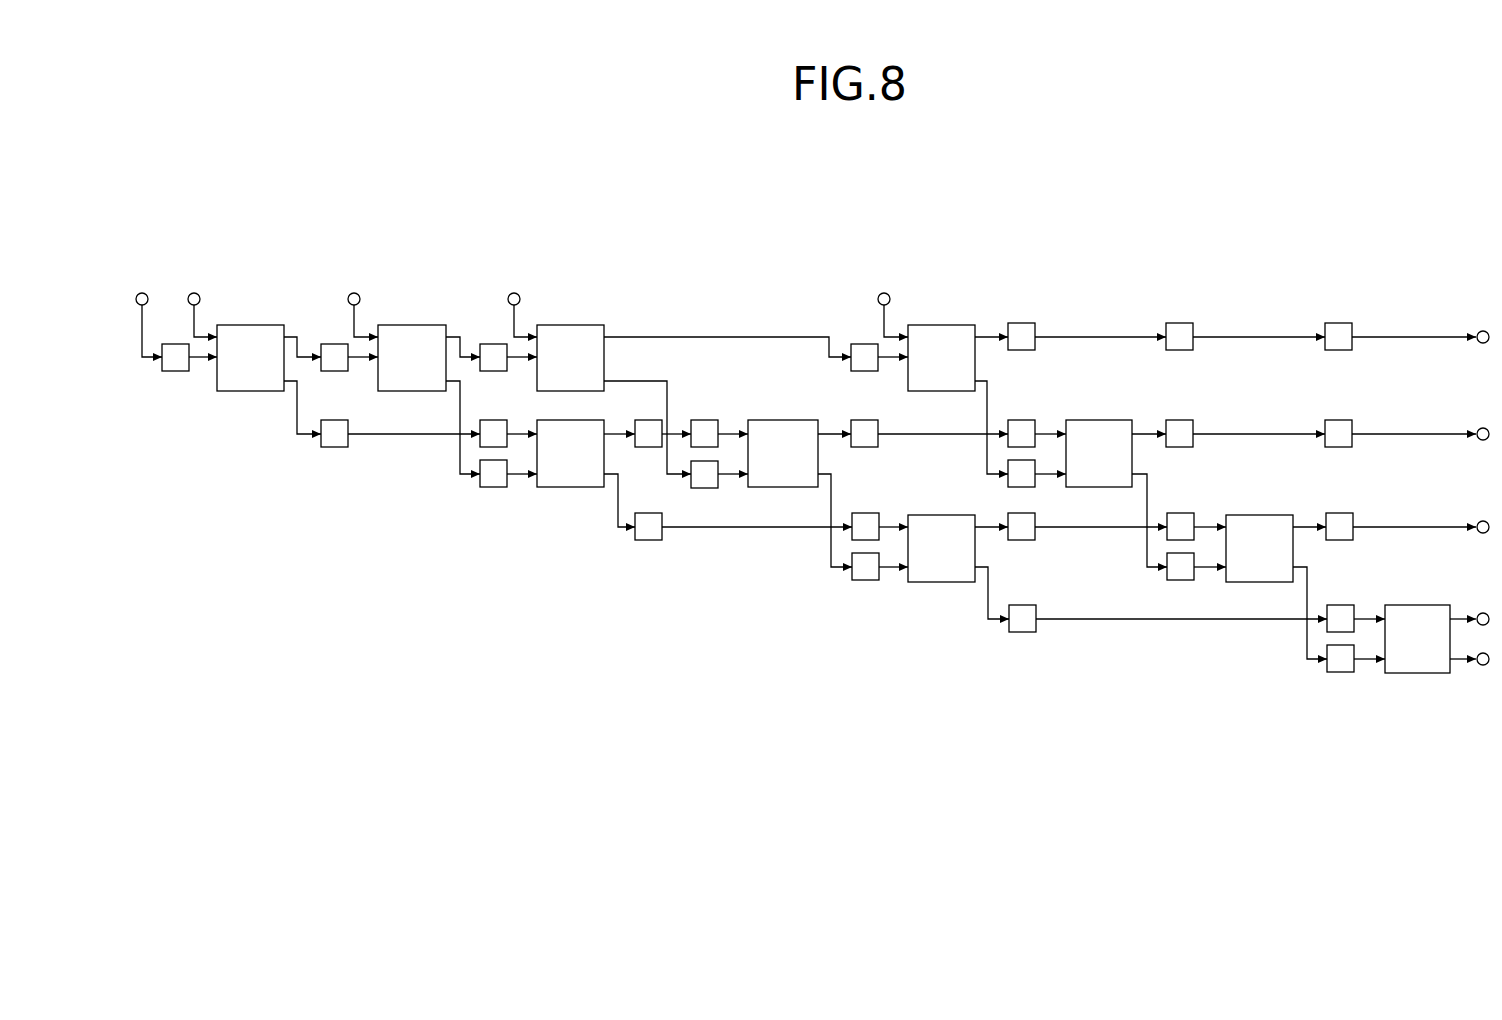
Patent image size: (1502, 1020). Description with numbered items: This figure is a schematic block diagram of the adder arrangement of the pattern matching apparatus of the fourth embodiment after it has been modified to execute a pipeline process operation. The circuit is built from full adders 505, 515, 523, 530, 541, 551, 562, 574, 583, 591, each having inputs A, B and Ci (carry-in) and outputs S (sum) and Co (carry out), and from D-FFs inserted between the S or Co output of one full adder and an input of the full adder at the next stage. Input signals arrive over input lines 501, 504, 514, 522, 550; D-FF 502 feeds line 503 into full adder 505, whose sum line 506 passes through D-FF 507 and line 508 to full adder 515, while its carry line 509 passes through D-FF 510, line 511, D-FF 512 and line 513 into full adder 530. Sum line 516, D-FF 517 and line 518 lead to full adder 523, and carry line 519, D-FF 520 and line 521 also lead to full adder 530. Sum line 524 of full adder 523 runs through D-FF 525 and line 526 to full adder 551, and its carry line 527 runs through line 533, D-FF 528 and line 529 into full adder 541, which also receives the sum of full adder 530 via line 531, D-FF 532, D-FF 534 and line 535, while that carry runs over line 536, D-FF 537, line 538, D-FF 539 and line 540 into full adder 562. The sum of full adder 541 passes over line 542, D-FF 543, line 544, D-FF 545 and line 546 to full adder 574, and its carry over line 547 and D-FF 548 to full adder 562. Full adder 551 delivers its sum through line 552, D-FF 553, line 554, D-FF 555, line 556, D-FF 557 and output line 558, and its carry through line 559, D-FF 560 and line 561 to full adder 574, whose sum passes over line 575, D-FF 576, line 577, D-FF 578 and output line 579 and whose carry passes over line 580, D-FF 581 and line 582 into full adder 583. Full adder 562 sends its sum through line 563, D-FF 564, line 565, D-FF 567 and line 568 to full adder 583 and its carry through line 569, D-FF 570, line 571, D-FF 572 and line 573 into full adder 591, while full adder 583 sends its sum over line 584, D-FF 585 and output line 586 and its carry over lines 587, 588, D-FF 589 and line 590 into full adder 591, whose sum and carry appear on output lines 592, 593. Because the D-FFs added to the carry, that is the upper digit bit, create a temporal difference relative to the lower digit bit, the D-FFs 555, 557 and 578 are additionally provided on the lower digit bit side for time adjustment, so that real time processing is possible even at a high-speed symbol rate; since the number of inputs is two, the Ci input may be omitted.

The input line b0 501 is at (144, 342).
The D flip-flop 502 is at (172, 373).
The signal line 503 is at (198, 362).
The input line b1 504 is at (199, 313).
The full adder 505 is at (266, 322).
The sum output line 506 is at (296, 335).
The D flip-flop 507 is at (335, 372).
The signal line 508 is at (360, 360).
The carry output line 509 is at (296, 412).
The D flip-flop 510 is at (333, 448).
The signal line 511 is at (382, 437).
The D flip-flop 512 is at (465, 445).
The signal line 513 is at (519, 432).
The input line b2 514 is at (360, 313).
The full adder 515 is at (428, 322).
The sum output line 516 is at (458, 332).
The D flip-flop 517 is at (493, 343).
The signal line 518 is at (521, 360).
The carry output line 519 is at (458, 398).
The D flip-flop 520 is at (487, 489).
The signal line 521 is at (520, 477).
The input line b3 522 is at (518, 313).
The full adder 523 is at (580, 322).
The sum output line 524 is at (624, 335).
The D flip-flop 525 is at (860, 343).
The signal line 526 is at (891, 362).
The carry output line 527 is at (617, 380).
The D flip-flop 528 is at (704, 489).
The signal line 529 is at (730, 477).
The full adder 530 is at (550, 419).
The sum output line 531 is at (616, 436).
The D flip-flop 532 is at (647, 419).
The signal line 533 is at (665, 462).
The D flip-flop 534 is at (705, 419).
The signal line 535 is at (733, 433).
The carry output line 536 is at (614, 510).
The D flip-flop 537 is at (648, 542).
The signal line 538 is at (717, 530).
The D flip-flop 539 is at (860, 512).
The signal line 540 is at (888, 524).
The full adder 541 is at (778, 418).
The sum output line 542 is at (830, 432).
The D flip-flop 543 is at (865, 419).
The signal line 544 is at (957, 432).
The D flip-flop 545 is at (1021, 419).
The signal line 546 is at (1046, 432).
The carry output line 547 is at (830, 573).
The D flip-flop 548 is at (864, 582).
The input line b4 550 is at (889, 314).
The full adder 551 is at (950, 322).
The sum output line 552 is at (987, 335).
The D flip-flop 553 is at (1022, 322).
The signal line 554 is at (1086, 335).
The D-FF 555 is at (1181, 322).
The signal line 556 is at (1262, 335).
The D-FF 557 is at (1340, 322).
The output line 558 is at (1408, 335).
The carry output line 559 is at (990, 380).
The D flip-flop 560 is at (1006, 488).
The signal line 561 is at (1050, 477).
The full adder 562 is at (935, 513).
The sum output line 563 is at (988, 530).
The D flip-flop 564 is at (1021, 543).
The signal line 565 is at (1088, 530).
The D flip-flop 567 is at (1180, 512).
The signal line 568 is at (1208, 525).
The carry output line 569 is at (986, 598).
The D flip-flop 570 is at (1022, 634).
The signal line 571 is at (1110, 622).
The D flip-flop 572 is at (1340, 604).
The signal line 573 is at (1365, 616).
The full adder 574 is at (1098, 418).
The sum output line 575 is at (1146, 432).
The D flip-flop 576 is at (1181, 418).
The signal line 577 is at (1250, 432).
The D-FF 578 is at (1340, 418).
The output line 579 is at (1428, 432).
The carry output line 580 is at (1146, 512).
The D flip-flop 581 is at (1165, 582).
The signal line 582 is at (1208, 582).
The full adder 583 is at (1261, 513).
The sum output line 584 is at (1304, 525).
The D flip-flop 585 is at (1340, 512).
The output line 586 is at (1428, 525).
The carry output line 587 is at (1306, 604).
The signal line 588 is at (1312, 668).
The D flip-flop 589 is at (1340, 674).
The signal line 590 is at (1366, 663).
The full adder 591 is at (1420, 603).
The sum output line 592 is at (1460, 615).
The carry output line 593 is at (1460, 663).